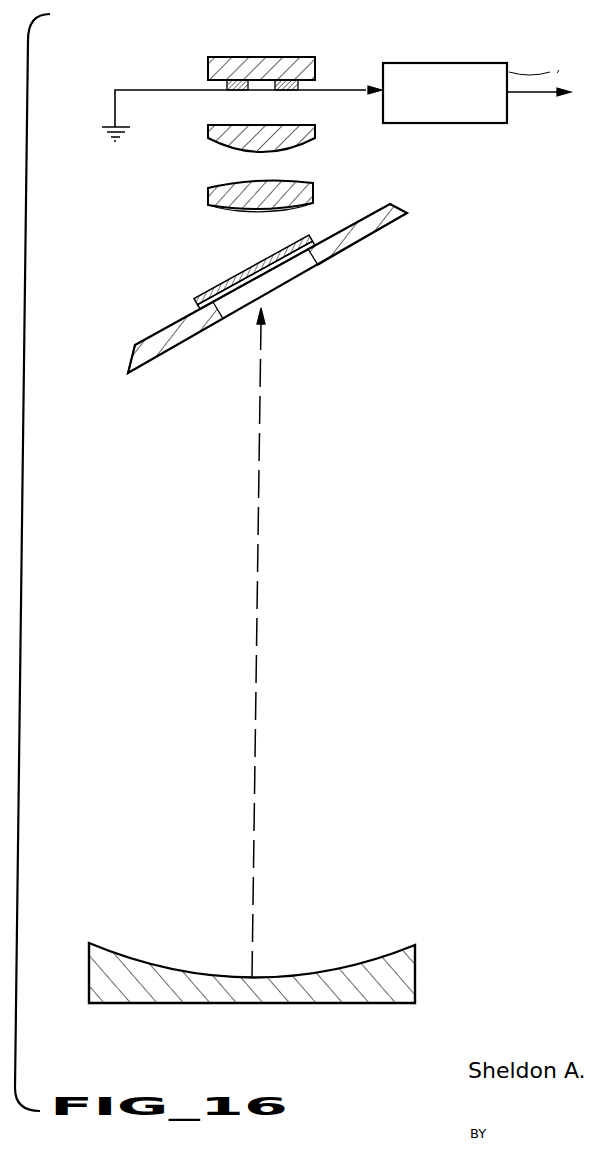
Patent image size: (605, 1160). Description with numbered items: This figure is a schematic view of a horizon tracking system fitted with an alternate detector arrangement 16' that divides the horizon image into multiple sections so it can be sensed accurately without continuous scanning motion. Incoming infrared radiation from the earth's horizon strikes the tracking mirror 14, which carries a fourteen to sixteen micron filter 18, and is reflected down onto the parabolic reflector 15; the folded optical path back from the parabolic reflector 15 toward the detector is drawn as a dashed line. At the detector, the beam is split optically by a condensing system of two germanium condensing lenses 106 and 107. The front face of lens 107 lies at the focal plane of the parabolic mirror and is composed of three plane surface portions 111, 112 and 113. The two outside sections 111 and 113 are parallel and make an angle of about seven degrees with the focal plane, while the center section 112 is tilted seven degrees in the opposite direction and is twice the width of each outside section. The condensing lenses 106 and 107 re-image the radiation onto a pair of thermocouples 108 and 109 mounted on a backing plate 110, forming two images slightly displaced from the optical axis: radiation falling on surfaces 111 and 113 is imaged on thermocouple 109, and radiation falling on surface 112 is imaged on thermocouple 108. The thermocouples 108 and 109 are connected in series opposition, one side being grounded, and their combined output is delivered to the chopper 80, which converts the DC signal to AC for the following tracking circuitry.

The alternate detector arrangement 16' is at (236, 134).
The backing plate 110 is at (272, 63).
The thermocouple 108 is at (233, 92).
The thermocouple 109 is at (285, 91).
The condensing germanium lens 106 is at (305, 142).
The condensing germanium lens 107 is at (308, 192).
The plane surface portion 111 is at (220, 210).
The plane surface portion 112 is at (265, 210).
The plane surface portion 113 is at (298, 207).
The chopper 80 is at (448, 65).
The tracking mirror 14 is at (338, 255).
The 14-16 micron filter 18 is at (208, 293).
The parabolic reflector 15 is at (373, 961).